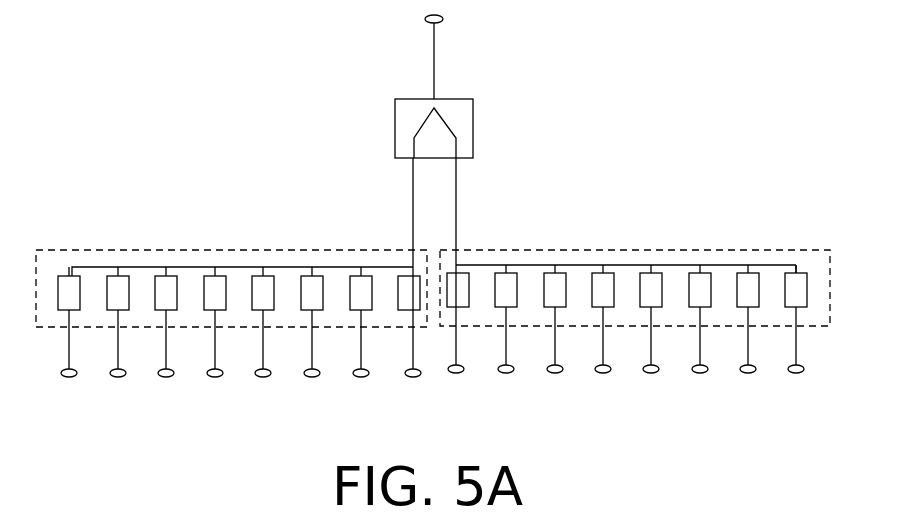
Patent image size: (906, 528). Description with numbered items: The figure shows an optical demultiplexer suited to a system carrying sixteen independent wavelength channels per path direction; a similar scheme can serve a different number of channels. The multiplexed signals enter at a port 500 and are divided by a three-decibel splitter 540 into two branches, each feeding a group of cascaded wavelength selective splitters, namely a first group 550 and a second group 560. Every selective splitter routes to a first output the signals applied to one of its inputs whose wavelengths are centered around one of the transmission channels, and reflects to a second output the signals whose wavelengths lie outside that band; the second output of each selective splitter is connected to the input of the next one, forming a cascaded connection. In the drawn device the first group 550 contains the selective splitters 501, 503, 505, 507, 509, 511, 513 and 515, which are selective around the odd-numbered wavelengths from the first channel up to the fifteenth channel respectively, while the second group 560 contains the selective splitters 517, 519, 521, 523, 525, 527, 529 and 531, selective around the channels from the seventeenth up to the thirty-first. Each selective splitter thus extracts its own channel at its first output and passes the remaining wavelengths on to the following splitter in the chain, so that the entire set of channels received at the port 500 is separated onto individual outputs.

The port 500 is at (421, 30).
The 3 dB splitter 540 is at (485, 125).
The selective splitter 515 is at (406, 250).
The selective splitter 517 is at (461, 250).
The selective splitter 501 is at (66, 263).
The selective splitter 503 is at (115, 263).
The selective splitter 505 is at (163, 263).
The selective splitter 507 is at (212, 263).
The selective splitter 509 is at (260, 263).
The selective splitter 511 is at (309, 263).
The selective splitter 513 is at (358, 263).
The selective splitter 519 is at (503, 260).
The selective splitter 521 is at (552, 260).
The selective splitter 523 is at (600, 260).
The selective splitter 525 is at (648, 260).
The selective splitter 527 is at (697, 260).
The selective splitter 529 is at (745, 260).
The selective splitter 531 is at (793, 260).
The group of cascaded wavelength selective splitters 550 is at (40, 340).
The group of cascaded wavelength selective splitters 560 is at (828, 333).